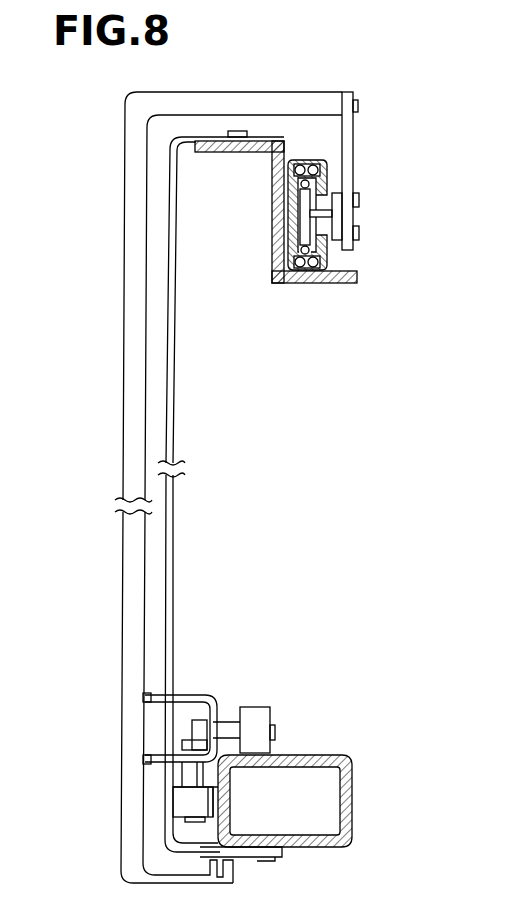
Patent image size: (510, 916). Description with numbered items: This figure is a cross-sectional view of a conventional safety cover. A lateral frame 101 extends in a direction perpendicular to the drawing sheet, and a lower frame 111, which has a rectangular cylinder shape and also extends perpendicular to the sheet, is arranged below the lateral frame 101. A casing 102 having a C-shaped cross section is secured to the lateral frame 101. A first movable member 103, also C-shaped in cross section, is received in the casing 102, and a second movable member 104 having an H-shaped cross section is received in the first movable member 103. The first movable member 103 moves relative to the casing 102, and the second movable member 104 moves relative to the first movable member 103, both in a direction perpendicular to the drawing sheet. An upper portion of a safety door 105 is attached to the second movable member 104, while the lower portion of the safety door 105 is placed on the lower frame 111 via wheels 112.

The lateral frame 101 is at (313, 285).
The casing 102 is at (304, 150).
The first movable member 103 is at (293, 210).
The second movable member 104 is at (332, 215).
The safety door 105 is at (122, 231).
The lower frame 111 is at (350, 792).
The wheels 112 is at (253, 717).